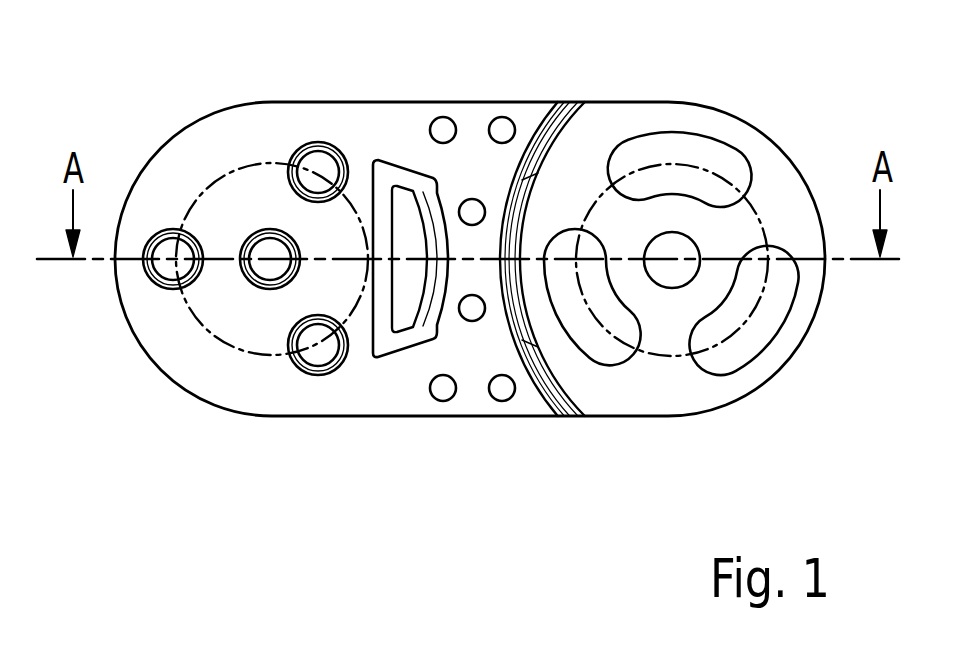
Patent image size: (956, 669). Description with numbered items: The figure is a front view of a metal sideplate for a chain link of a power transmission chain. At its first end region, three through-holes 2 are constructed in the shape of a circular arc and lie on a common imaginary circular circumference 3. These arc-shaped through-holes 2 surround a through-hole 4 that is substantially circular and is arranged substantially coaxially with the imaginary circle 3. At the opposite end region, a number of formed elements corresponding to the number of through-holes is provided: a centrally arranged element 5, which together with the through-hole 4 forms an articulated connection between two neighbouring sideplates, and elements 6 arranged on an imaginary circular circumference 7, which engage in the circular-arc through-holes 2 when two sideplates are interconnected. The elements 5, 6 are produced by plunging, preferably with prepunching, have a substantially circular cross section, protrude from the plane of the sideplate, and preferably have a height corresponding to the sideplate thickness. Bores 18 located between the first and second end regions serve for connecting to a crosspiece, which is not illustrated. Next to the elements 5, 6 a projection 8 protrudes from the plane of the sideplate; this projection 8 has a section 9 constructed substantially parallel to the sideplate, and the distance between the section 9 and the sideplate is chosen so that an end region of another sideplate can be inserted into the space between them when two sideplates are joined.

The through-holes 2 is at (703, 152).
The imaginary circular circumference 3 is at (772, 262).
The through-hole 4 is at (680, 247).
The element 5 is at (258, 284).
The elements 6 is at (320, 152).
The imaginary circular circumference 7 is at (200, 337).
The projection 8 is at (420, 293).
The section 9 is at (397, 325).
The bores 18 is at (500, 127).